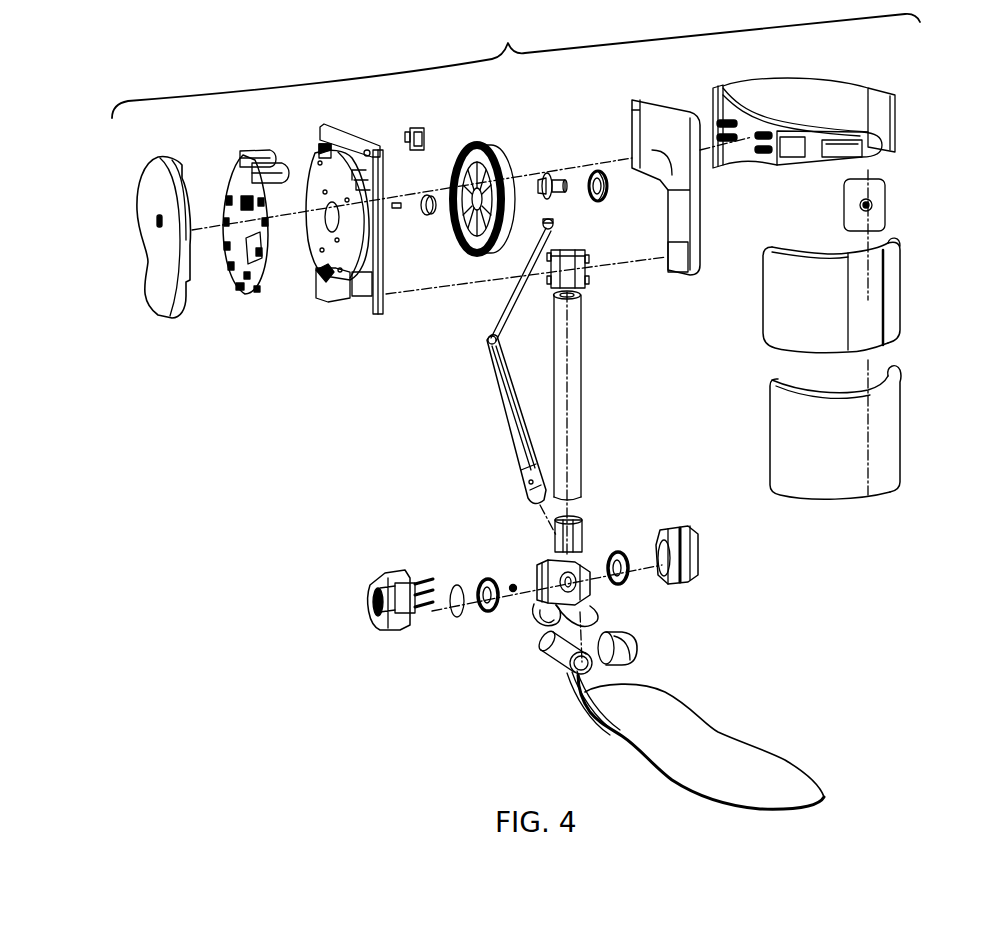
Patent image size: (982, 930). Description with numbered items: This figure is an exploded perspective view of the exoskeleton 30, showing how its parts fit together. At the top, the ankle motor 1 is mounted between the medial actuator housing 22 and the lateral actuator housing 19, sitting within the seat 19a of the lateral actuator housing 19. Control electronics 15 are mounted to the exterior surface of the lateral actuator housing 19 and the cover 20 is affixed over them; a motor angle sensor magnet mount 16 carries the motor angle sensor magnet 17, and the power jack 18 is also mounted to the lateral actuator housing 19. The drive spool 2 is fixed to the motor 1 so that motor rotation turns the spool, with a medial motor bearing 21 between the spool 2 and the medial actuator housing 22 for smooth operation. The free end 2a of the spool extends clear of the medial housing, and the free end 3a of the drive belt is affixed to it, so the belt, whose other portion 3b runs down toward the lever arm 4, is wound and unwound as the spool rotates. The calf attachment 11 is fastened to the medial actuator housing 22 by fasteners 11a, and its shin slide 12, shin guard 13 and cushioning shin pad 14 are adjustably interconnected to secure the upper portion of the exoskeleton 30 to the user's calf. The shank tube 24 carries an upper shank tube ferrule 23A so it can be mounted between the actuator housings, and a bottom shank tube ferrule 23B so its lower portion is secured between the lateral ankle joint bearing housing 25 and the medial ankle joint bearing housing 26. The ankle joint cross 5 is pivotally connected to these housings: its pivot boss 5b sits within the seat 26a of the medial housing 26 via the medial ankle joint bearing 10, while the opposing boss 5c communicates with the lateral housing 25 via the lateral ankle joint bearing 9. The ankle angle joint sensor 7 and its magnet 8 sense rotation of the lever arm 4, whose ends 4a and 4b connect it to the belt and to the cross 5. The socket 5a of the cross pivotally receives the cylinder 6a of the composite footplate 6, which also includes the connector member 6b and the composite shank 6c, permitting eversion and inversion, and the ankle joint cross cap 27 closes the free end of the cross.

The motor 1 is at (485, 146).
The drive spool 2 is at (550, 173).
The free end 2a is at (564, 179).
The free end of drive belt 3a is at (554, 226).
The connecting rod 3b is at (488, 336).
The lever arm 4 is at (506, 412).
The upper arm end 4a is at (487, 342).
The lower arm end 4b is at (536, 500).
The ankle joint cross member 5 is at (592, 603).
The socket 5a is at (596, 622).
The pivot member 5b is at (578, 572).
The bottom socket 5c is at (538, 612).
The composite footplate 6 is at (724, 727).
The socket portion 6a is at (552, 660).
The vertical connector portion 6b is at (574, 702).
The composite shank 6c is at (788, 763).
The ankle angle joint sensor 7 is at (459, 585).
The ankle angle joint sensor magnet 8 is at (515, 584).
The lateral ankle joint bearing 9 is at (491, 579).
The medial ankle joint bearing 10 is at (623, 556).
The calf attachment 11 is at (727, 84).
The fasteners 11a is at (757, 130).
The shin slide 12 is at (882, 192).
The shin guard 13 is at (893, 290).
The shin pad 14 is at (895, 404).
The control electronics 15 is at (243, 158).
The motor angle sensor magnet mount 16 is at (429, 195).
The motor angle sensor magnet 17 is at (397, 202).
The power jack 18 is at (417, 128).
The lateral actuator housing 19 is at (352, 130).
The seat 19a is at (320, 302).
The control electronics cover 20 is at (156, 170).
The medial motor bearing 21 is at (603, 170).
The medial actuator housing 22 is at (661, 98).
The upper shank tube ferrule 23A is at (588, 276).
The bottom shank tube ferrule 23B is at (583, 530).
The shank tube 24 is at (576, 458).
The lateral ankle joint bearing housing 25 is at (376, 622).
The medial ankle joint bearing housing 26 is at (702, 532).
The seat 26a is at (684, 570).
The ankle joint cross cap 27 is at (633, 655).
The exoskeleton 30 is at (228, 415).